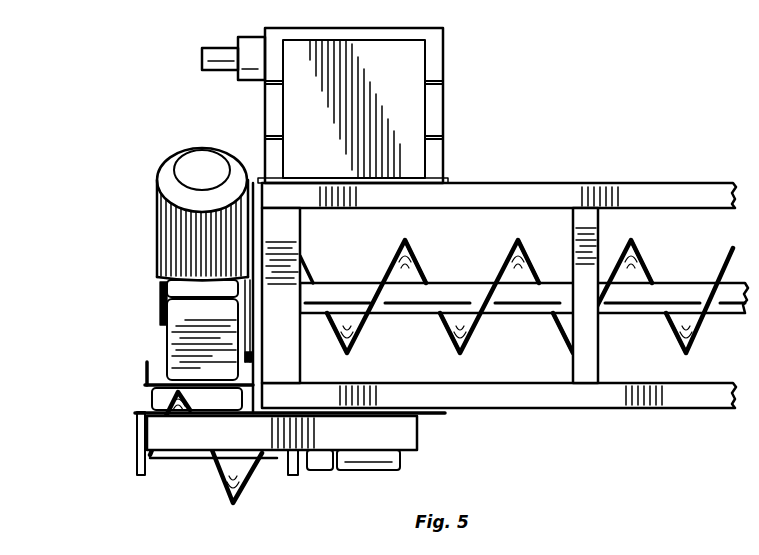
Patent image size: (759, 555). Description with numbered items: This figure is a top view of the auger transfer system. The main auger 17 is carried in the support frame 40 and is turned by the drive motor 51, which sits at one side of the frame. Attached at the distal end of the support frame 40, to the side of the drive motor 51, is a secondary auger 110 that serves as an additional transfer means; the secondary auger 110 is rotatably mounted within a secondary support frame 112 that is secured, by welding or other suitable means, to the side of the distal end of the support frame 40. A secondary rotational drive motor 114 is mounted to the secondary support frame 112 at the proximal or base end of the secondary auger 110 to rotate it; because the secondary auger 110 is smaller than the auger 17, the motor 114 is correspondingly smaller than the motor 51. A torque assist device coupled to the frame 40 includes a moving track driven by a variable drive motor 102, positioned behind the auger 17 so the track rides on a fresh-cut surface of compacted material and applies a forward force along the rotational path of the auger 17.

The motor 102 is at (220, 58).
The support frame 40 is at (668, 196).
The auger 17 is at (500, 256).
The drive motor 51 is at (160, 220).
The secondary support frame 112 is at (185, 440).
The secondary auger 110 is at (227, 475).
The secondary rotational drive motor 114 is at (355, 465).